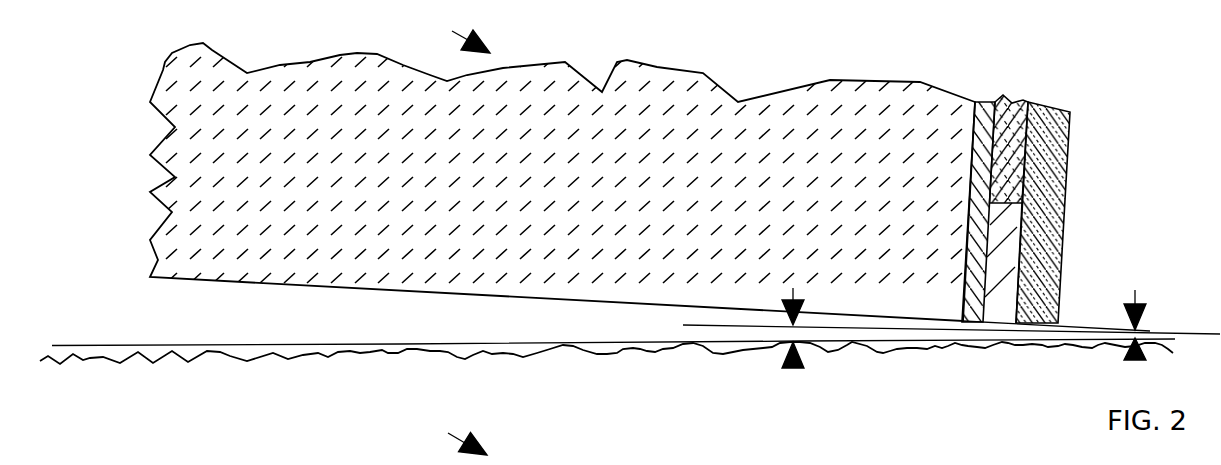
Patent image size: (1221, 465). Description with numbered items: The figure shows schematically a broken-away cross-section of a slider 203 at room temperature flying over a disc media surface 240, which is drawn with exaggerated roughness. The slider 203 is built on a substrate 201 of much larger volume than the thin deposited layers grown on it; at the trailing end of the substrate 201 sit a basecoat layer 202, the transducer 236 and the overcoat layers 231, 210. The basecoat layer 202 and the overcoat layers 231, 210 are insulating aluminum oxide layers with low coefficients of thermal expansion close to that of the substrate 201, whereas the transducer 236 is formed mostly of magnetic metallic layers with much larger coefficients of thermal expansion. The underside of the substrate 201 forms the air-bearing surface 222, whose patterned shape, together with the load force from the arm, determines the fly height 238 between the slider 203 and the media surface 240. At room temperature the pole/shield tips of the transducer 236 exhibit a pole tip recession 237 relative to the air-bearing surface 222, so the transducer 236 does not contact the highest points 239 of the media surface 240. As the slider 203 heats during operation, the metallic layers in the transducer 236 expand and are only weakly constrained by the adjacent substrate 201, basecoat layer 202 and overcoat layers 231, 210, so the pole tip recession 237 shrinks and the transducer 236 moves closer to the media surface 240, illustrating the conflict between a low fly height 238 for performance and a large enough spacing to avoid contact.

The substrate 201 is at (581, 203).
The basecoat layer 202 is at (985, 102).
The slider 203 is at (446, 236).
The overcoat layer 210 is at (1054, 108).
The air-bearing surface 222 is at (902, 326).
The overcoat layer 231 is at (1013, 102).
The transducer 236 is at (1000, 323).
The pole tip recession 237 is at (1135, 360).
The fly height 238 is at (793, 368).
The highest points 239 is at (422, 316).
The disc media surface 240 is at (773, 350).